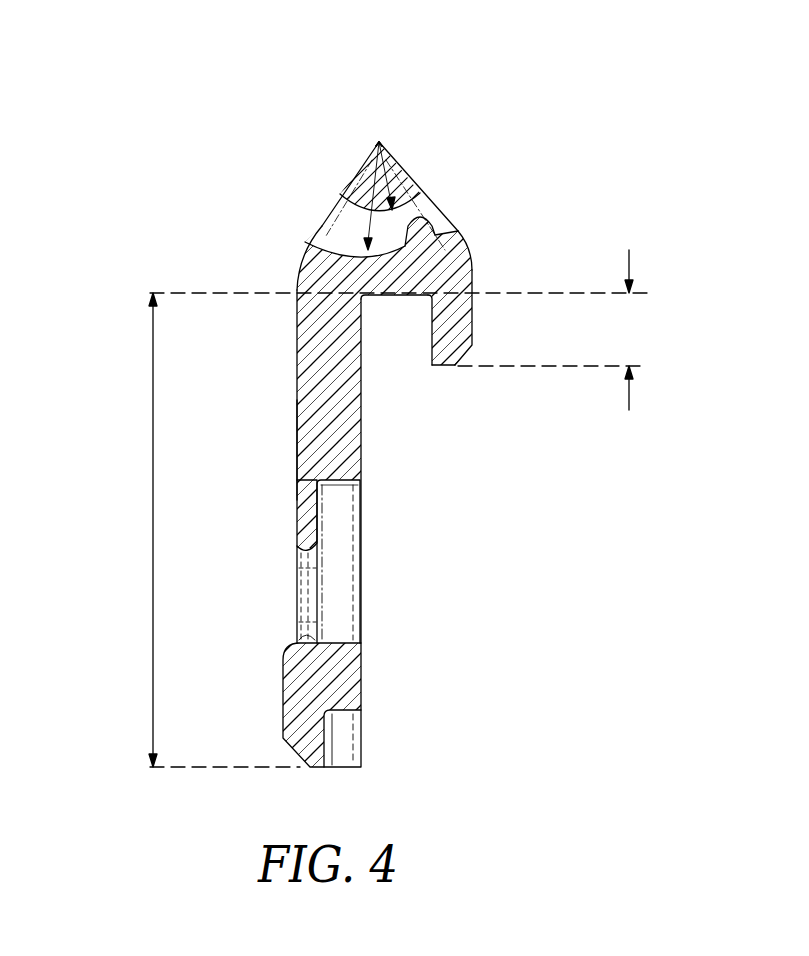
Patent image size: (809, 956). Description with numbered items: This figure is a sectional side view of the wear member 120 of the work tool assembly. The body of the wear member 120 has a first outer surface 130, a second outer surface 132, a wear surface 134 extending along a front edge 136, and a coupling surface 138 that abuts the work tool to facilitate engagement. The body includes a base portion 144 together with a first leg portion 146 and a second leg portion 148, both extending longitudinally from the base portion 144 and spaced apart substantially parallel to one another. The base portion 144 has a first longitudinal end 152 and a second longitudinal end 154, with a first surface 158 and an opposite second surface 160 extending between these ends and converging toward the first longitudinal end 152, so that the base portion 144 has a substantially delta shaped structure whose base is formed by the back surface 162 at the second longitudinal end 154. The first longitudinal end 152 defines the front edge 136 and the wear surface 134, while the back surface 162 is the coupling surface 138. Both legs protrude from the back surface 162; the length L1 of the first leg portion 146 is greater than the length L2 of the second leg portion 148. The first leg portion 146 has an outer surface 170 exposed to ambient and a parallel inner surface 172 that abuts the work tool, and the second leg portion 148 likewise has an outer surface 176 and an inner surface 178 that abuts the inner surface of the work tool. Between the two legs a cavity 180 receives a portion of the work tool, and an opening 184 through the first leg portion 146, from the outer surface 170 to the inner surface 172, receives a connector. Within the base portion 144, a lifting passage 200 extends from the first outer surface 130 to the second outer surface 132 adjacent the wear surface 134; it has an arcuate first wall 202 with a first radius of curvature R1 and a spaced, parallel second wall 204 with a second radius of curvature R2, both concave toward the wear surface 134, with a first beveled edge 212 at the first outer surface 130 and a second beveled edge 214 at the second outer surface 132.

The wear member 120 is at (660, 119).
The first outer surface 130 is at (298, 340).
The second outer surface 132 is at (474, 278).
The wear surface 134 is at (380, 142).
The front edge 136 is at (378, 140).
The coupling surface 138 is at (398, 295).
The base portion 144 is at (357, 166).
The first leg portion 146 is at (297, 494).
The second leg portion 148 is at (442, 369).
The first longitudinal end 152 is at (380, 143).
The second longitudinal end 154 is at (377, 300).
The first surface 158 is at (302, 260).
The second surface 160 is at (474, 252).
The back surface 162 is at (417, 295).
The outer surface 170 is at (297, 448).
The inner surface 172 is at (362, 455).
The outer surface 176 is at (476, 323).
The inner surface 178 is at (427, 360).
The cavity 180 is at (401, 380).
The opening 184 is at (297, 597).
The lifting passage 200 is at (427, 201).
The first wall 202 is at (440, 222).
The second wall 204 is at (339, 194).
The first beveled edge 212 is at (316, 239).
The second beveled edge 214 is at (434, 242).
The first radius of curvature R1 is at (362, 242).
The second radius of curvature R2 is at (394, 198).
The length of the first leg portion L1 is at (221, 530).
The length of the second leg portion L2 is at (551, 330).